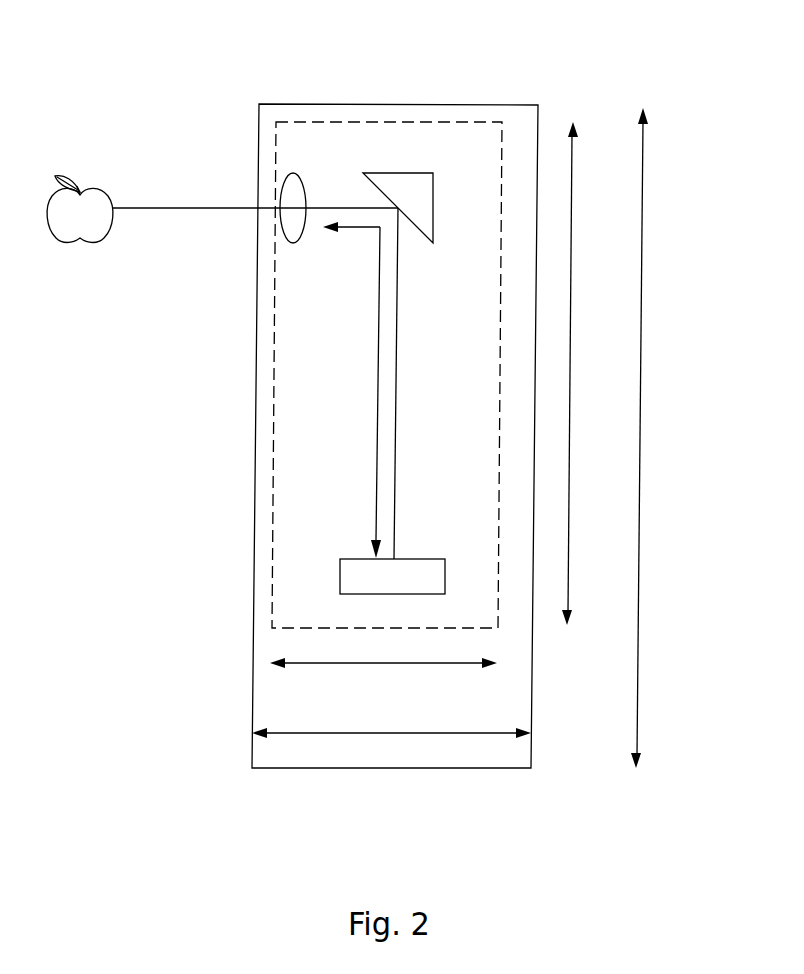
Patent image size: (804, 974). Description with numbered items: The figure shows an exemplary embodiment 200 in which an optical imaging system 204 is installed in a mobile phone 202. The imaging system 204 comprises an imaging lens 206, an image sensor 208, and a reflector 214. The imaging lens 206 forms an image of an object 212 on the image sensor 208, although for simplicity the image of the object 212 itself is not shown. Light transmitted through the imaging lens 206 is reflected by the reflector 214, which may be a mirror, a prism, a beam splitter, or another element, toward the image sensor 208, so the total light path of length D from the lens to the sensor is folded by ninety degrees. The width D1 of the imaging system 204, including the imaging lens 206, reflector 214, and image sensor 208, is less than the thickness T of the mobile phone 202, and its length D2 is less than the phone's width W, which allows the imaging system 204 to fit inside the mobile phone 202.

The exemplary embodiment 200 is at (167, 56).
The mobile phone 202 is at (503, 105).
The optical imaging system 204 is at (303, 122).
The imaging lens 206 is at (302, 188).
The image sensor 208 is at (410, 559).
The object 212 is at (112, 190).
The reflector 214 is at (433, 208).